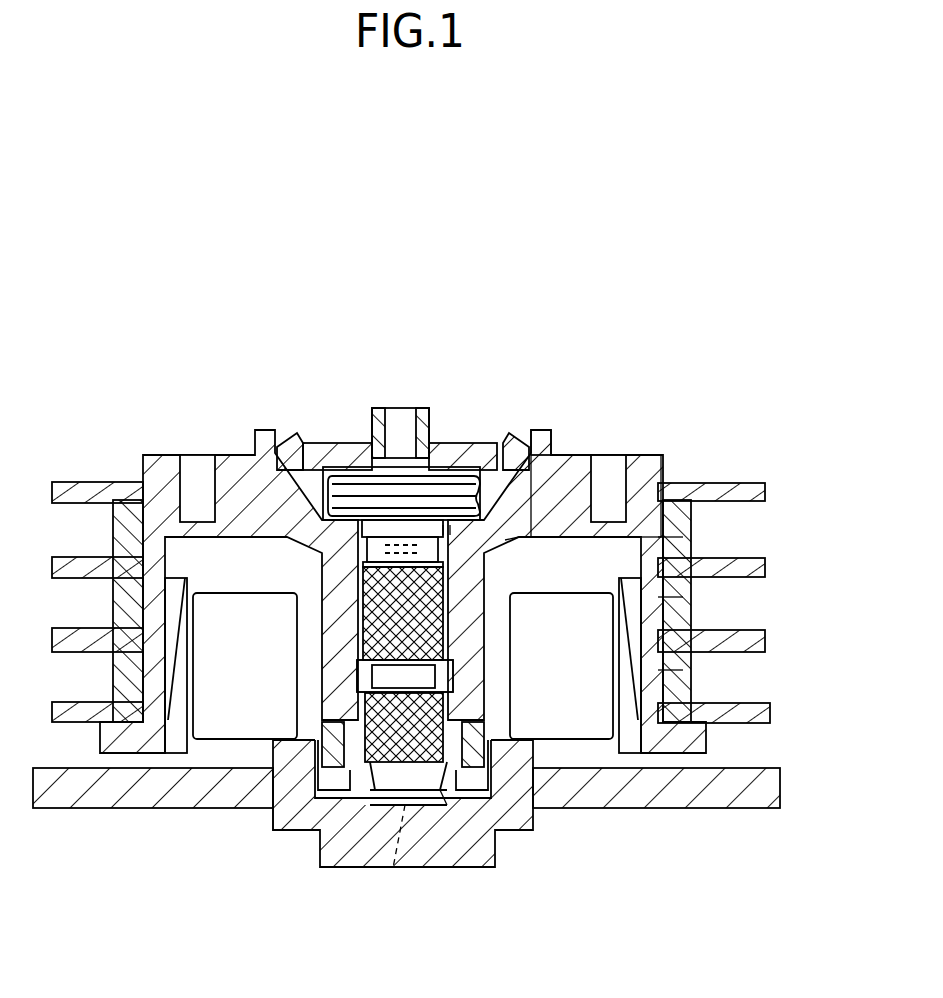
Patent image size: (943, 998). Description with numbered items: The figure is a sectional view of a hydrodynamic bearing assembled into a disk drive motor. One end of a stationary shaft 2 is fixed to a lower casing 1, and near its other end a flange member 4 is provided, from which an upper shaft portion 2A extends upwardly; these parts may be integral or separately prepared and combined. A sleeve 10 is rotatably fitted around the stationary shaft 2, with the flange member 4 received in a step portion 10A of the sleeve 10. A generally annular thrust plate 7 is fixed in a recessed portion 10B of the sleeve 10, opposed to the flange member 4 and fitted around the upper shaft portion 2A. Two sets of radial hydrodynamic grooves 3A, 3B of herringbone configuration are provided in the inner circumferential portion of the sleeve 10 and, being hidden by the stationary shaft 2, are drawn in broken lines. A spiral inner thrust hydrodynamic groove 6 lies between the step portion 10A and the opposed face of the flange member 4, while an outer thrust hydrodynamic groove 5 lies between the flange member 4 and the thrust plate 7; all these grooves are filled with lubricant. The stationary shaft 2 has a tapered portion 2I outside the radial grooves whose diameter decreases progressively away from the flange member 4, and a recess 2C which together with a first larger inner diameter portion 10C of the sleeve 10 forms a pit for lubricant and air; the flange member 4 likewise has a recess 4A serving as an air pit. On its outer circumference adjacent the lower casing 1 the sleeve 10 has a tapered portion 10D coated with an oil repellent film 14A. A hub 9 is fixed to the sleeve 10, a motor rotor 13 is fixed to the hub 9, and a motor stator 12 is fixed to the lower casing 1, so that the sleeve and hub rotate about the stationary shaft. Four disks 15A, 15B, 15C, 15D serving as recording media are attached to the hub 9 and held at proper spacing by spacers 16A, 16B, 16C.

The lower casing 1 is at (524, 812).
The stationary shaft 2 is at (425, 855).
The upper shaft portion 2A is at (382, 408).
The recess 2C is at (470, 825).
The tapered portion 2I is at (410, 805).
The radial hydrodynamic groove 3A is at (357, 620).
The radial hydrodynamic groove 3B is at (400, 800).
The flange member 4 is at (470, 445).
The recess 4A is at (290, 437).
The outer thrust hydrodynamic groove 5 is at (350, 467).
The inner thrust hydrodynamic groove 6 is at (455, 530).
The thrust plate 7 is at (450, 443).
The hub 9 is at (650, 455).
The sleeve 10 is at (522, 808).
The step portion 10A is at (505, 540).
The recessed portion 10B is at (530, 430).
The first larger inner diameter portion 10C is at (355, 678).
The tapered portion 10D is at (310, 830).
The motor stator 12 is at (580, 715).
The motor rotor 13 is at (178, 753).
The oil repellent film 14A is at (318, 760).
The disk 15A is at (715, 482).
The disk 15B is at (760, 560).
The disk 15C is at (765, 637).
The disk 15D is at (770, 718).
The spacer 16A is at (683, 537).
The spacer 16B is at (683, 597).
The spacer 16C is at (683, 670).